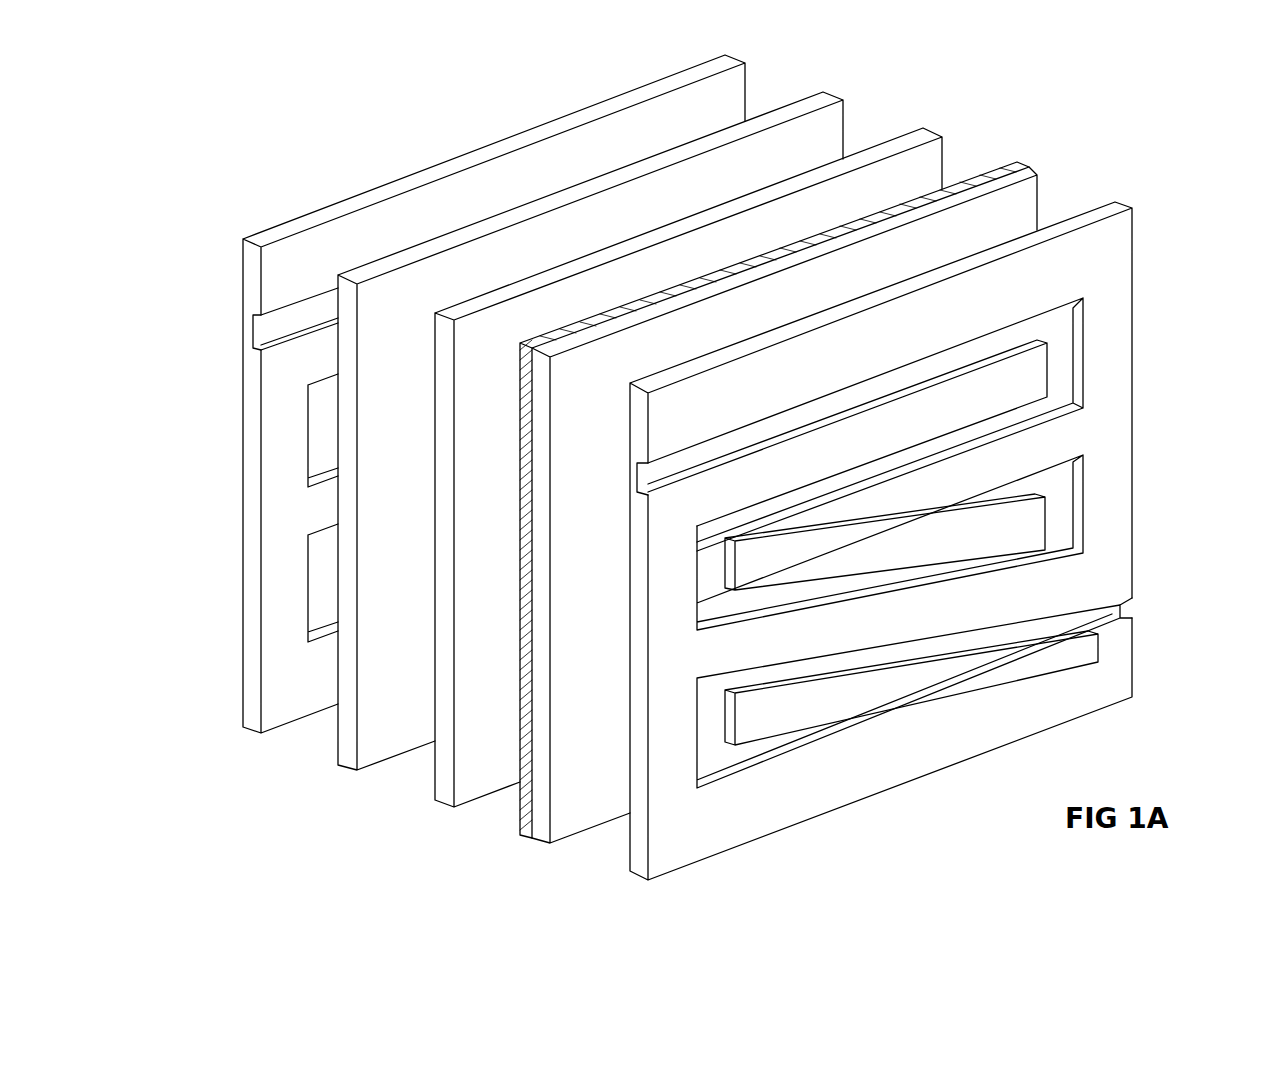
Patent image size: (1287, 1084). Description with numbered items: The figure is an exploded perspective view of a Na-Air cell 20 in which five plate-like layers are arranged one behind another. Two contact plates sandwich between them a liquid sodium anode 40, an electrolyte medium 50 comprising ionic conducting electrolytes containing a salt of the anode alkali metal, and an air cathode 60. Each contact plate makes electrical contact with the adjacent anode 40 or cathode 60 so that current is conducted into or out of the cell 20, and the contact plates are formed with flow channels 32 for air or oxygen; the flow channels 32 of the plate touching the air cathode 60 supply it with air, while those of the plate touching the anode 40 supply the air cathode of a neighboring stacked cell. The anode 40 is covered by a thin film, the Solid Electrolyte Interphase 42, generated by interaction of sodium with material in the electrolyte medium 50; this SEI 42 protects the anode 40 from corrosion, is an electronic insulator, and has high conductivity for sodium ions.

The Na-Air cell 20 is at (370, 171).
The flow channel 32 is at (1060, 360).
The liquid sodium anode 40 is at (798, 503).
The Solid Electrolyte Interphase 42 is at (1003, 158).
The electrolyte medium 50 is at (432, 812).
The air cathode 60 is at (331, 772).